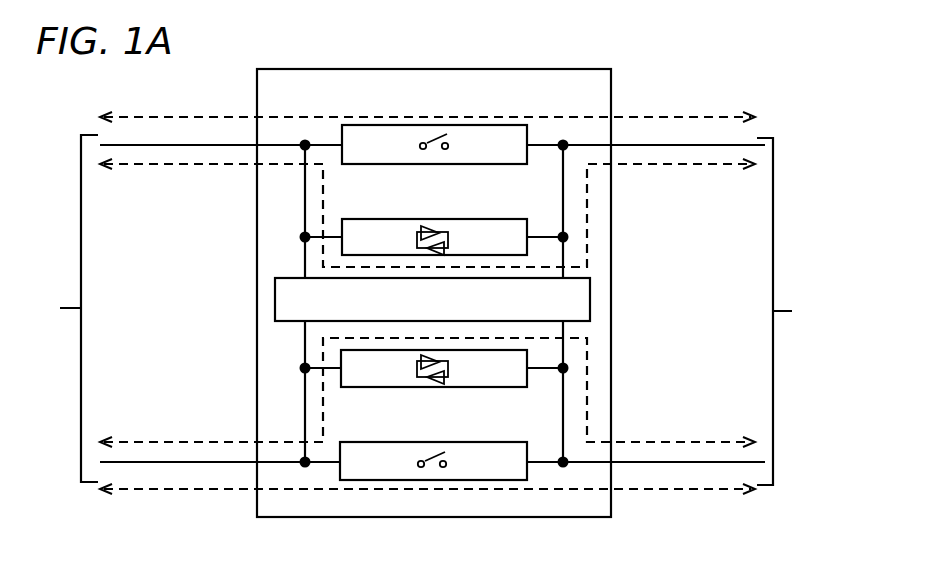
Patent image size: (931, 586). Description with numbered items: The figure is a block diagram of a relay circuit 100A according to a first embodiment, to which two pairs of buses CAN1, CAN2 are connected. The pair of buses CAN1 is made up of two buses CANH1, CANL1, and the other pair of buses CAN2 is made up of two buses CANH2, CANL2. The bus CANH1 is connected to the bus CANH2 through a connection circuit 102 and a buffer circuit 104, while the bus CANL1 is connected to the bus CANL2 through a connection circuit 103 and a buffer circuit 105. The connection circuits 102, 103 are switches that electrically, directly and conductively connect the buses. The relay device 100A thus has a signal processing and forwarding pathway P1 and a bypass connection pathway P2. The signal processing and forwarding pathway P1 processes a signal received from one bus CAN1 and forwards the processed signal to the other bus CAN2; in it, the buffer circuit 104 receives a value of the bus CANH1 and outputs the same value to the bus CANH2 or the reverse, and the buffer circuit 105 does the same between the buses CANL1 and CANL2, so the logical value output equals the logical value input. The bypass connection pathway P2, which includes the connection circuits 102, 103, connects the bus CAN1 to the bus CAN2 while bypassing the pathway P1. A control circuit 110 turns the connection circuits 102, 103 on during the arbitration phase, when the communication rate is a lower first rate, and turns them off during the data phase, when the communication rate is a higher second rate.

The relay circuit 100A is at (365, 69).
The connection circuit 102 is at (410, 125).
The connection circuit 103 is at (410, 480).
The buffer circuit 104 is at (405, 219).
The buffer circuit 105 is at (405, 387).
The control circuit 110 is at (590, 302).
The signal processing and forwarding pathway P1 is at (655, 165).
The bypass connection pathway P2 is at (622, 117).
The pair of buses CAN1 is at (52, 308).
The pair of buses CAN2 is at (803, 311).
The bus CANH1 is at (228, 145).
The bus CANH2 is at (628, 145).
The bus CANL1 is at (228, 462).
The bus CANL2 is at (628, 462).